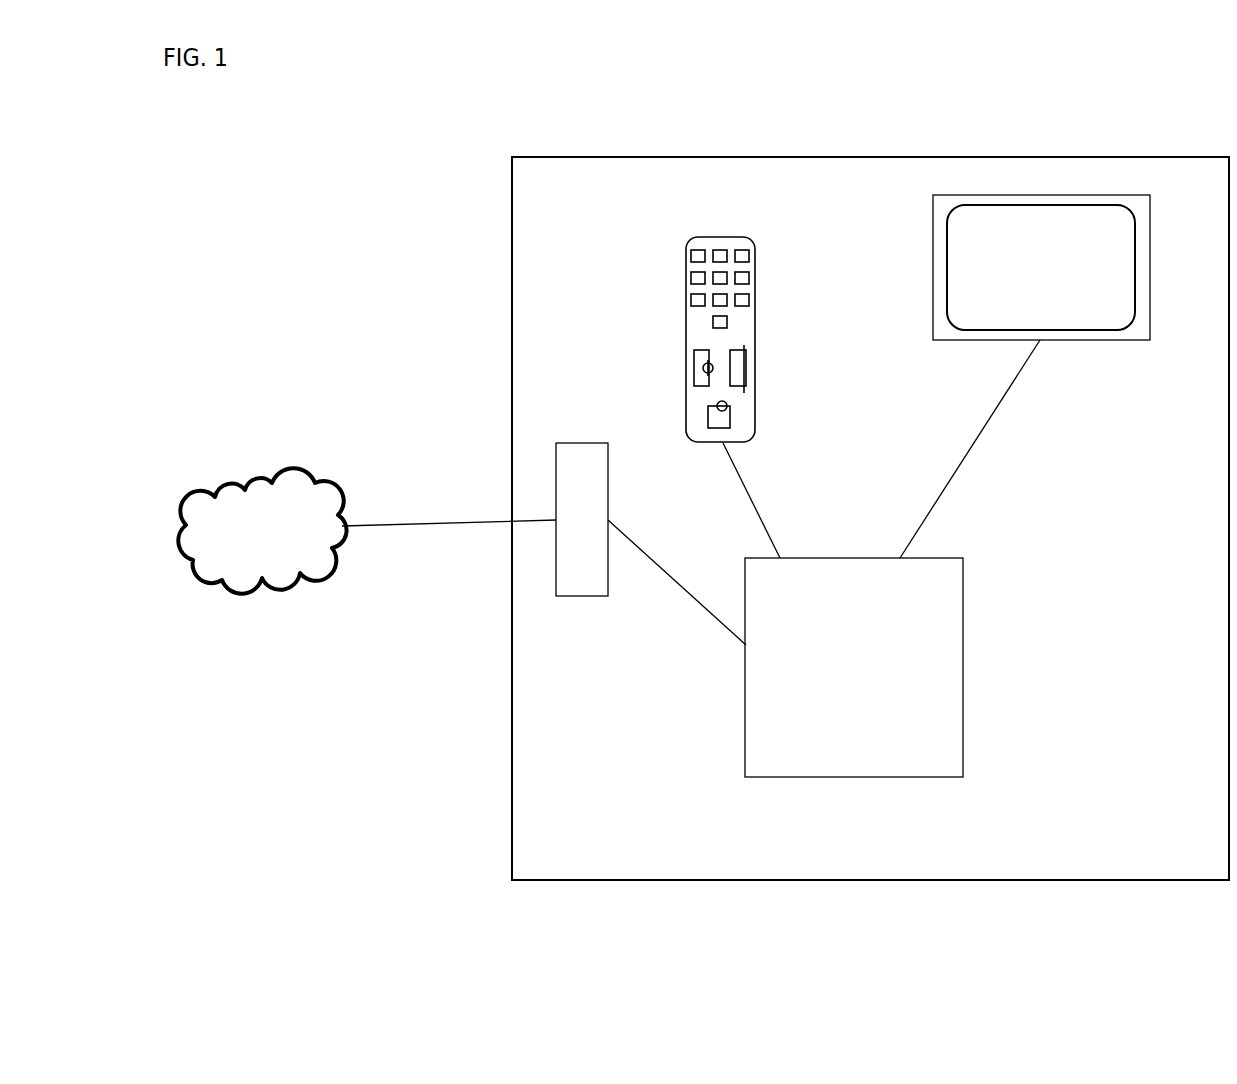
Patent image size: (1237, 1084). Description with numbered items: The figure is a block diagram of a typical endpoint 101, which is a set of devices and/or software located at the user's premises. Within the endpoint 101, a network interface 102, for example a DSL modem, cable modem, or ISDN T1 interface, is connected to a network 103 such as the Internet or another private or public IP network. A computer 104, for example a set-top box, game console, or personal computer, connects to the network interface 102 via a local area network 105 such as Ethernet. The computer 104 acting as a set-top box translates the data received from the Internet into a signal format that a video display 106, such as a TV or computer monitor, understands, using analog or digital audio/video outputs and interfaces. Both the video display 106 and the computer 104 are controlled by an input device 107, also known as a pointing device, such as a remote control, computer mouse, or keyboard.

The endpoint 101 is at (818, 880).
The network interface 102 is at (582, 597).
The network 103 is at (240, 593).
The computer 104 is at (845, 778).
The local area network 105 is at (668, 578).
The video display 106 is at (1102, 342).
The input device 107 is at (755, 345).